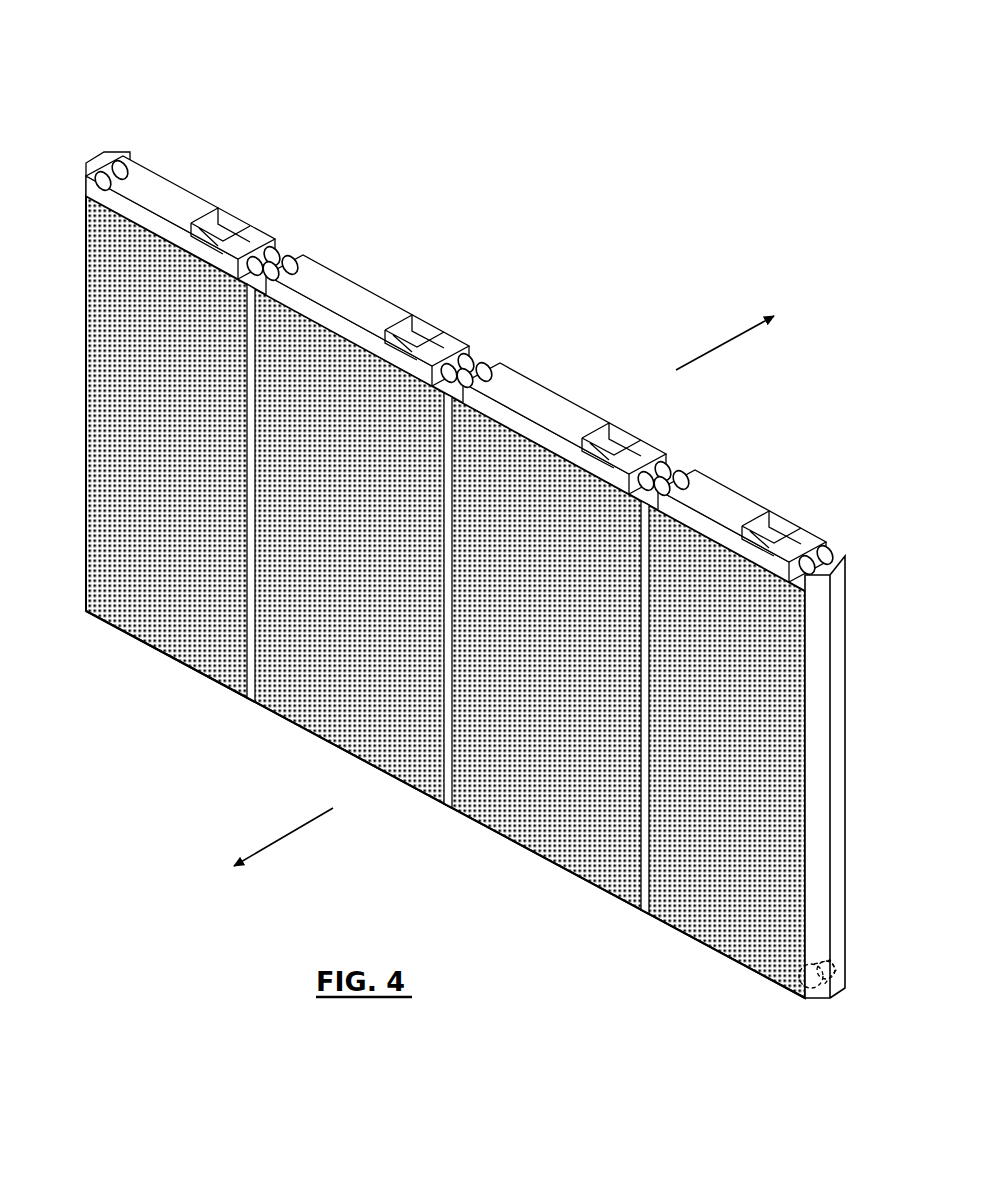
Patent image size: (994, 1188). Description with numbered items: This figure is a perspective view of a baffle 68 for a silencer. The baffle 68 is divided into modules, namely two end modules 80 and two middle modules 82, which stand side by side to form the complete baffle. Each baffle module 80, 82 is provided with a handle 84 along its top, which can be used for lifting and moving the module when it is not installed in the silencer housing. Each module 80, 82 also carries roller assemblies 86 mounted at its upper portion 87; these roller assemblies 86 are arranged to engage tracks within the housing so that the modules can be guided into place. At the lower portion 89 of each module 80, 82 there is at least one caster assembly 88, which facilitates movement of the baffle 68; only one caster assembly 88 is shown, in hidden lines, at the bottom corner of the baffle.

The baffle 68 is at (291, 104).
The end module 80 is at (238, 213).
The middle module 82 is at (497, 340).
The handle 84 is at (390, 300).
The roller assembly 86 is at (296, 258).
The upper portion 87 is at (322, 277).
The caster assembly 88 is at (790, 988).
The lower portion 89 is at (663, 928).